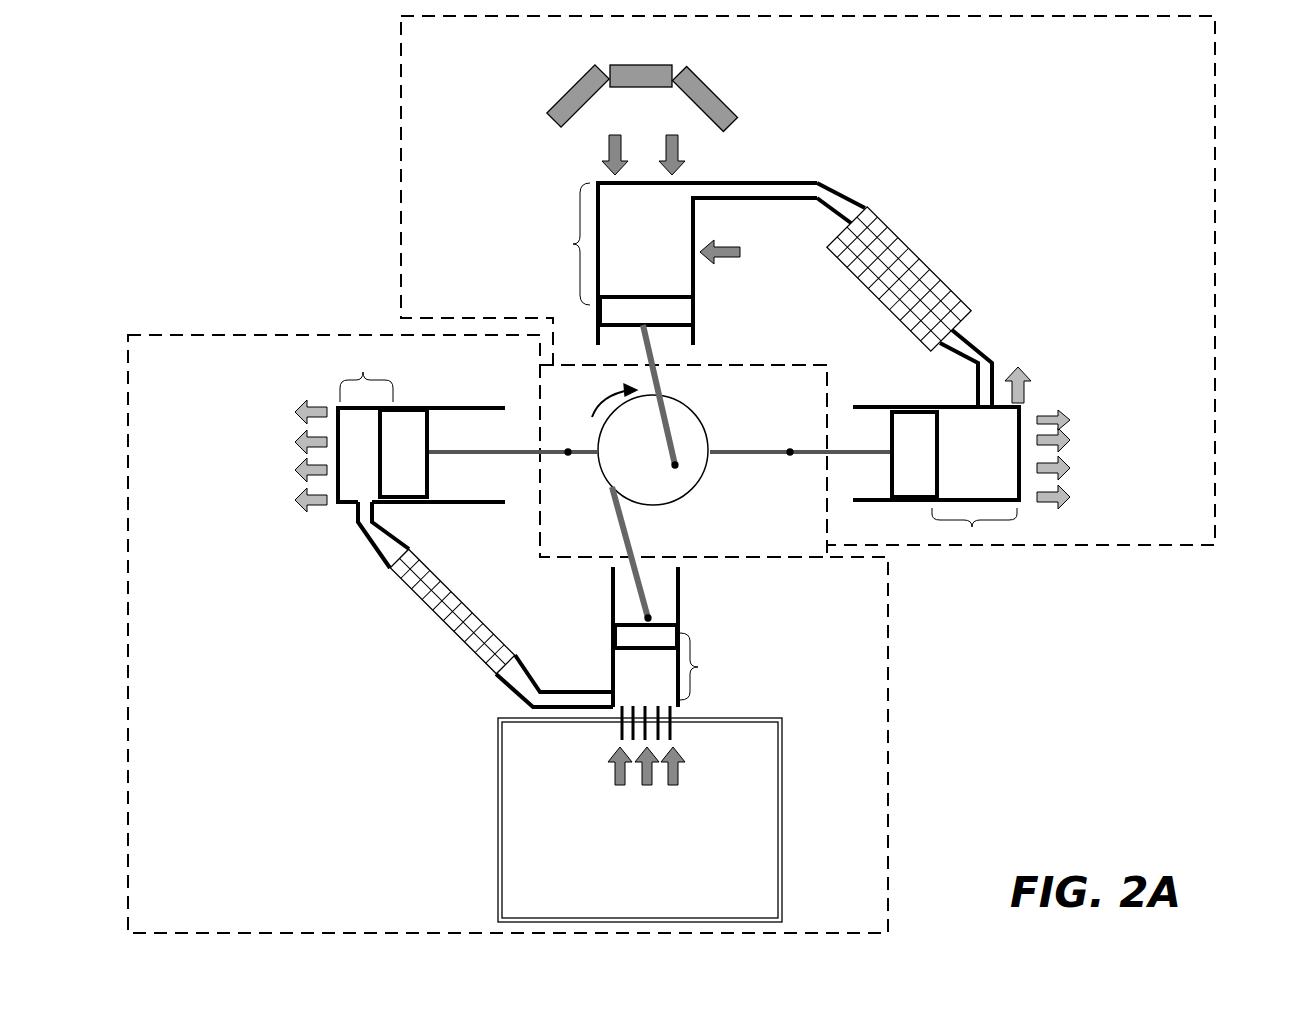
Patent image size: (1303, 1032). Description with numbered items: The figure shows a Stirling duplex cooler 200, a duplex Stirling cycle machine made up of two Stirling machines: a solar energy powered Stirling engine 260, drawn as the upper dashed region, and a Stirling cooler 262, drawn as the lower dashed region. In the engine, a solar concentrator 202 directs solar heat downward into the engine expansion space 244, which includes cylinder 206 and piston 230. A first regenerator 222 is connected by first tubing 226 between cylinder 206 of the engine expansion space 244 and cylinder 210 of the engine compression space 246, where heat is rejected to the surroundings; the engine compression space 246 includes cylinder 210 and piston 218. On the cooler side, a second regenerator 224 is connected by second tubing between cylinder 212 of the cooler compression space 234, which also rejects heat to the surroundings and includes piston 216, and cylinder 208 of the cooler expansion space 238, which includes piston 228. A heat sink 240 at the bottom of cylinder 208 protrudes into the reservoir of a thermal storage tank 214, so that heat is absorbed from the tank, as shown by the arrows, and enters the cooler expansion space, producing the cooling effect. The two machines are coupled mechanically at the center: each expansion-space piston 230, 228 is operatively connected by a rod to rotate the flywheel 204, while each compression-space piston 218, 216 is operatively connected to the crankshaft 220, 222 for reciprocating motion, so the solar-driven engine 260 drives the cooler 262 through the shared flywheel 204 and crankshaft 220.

The Stirling duplex cooler 200 is at (238, 64).
The solar concentrator 202 is at (603, 99).
The flywheel 204 is at (683, 461).
The cylinder of the engine expansion space 206 is at (707, 264).
The cylinder of the cooler compression space 208 is at (645, 637).
The cylinder of the engine compression space 210 is at (1025, 438).
The cylinder of the cooler expansion space 212 is at (336, 453).
The thermal storage tank 214 is at (765, 837).
The piston 216 is at (403, 453).
The piston 218 is at (914, 454).
The crankshaft 220 is at (801, 437).
The first regenerator 222 is at (945, 277).
The second regenerator 224 is at (463, 604).
The first tubing 226 is at (780, 183).
The piston 228 is at (646, 637).
The piston 230 is at (646, 311).
The cooler compression space 234 is at (366, 373).
The cooler expansion space 238 is at (722, 666).
The heat sink 240 is at (592, 721).
The engine expansion space 244 is at (555, 244).
The engine compression space 246 is at (974, 529).
The Stirling engine 260 is at (1220, 187).
The Stirling cooler 262 is at (888, 787).